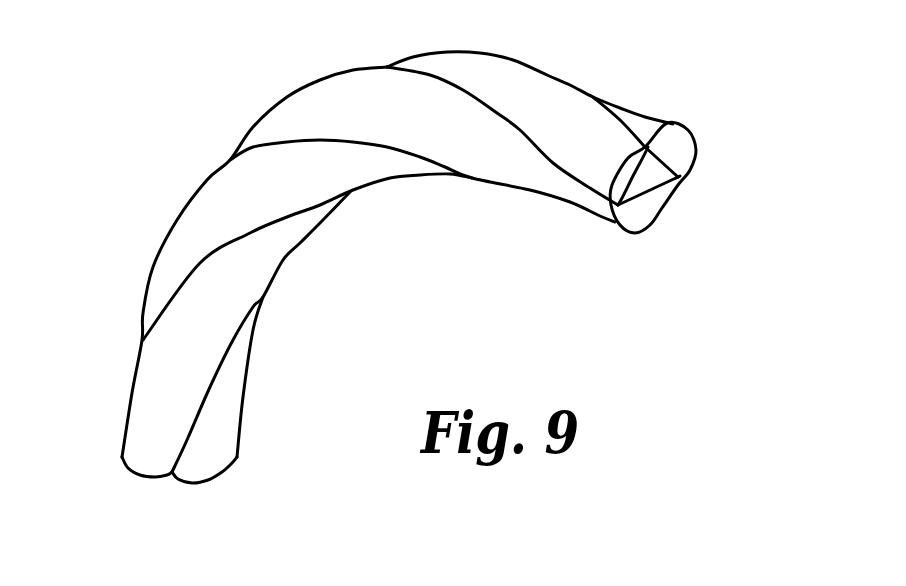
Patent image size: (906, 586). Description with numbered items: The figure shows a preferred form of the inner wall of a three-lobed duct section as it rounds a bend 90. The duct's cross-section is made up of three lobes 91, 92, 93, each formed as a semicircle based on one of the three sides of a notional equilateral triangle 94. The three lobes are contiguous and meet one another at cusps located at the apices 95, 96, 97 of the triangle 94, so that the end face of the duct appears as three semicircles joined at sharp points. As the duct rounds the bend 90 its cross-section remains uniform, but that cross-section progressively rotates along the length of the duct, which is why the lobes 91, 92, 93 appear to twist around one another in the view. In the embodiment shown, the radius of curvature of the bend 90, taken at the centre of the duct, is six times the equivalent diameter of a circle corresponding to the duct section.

The bend 90 is at (375, 233).
The lobe 91 is at (355, 173).
The lobe 92 is at (535, 177).
The lobe 93 is at (563, 90).
The notional equilateral triangle 94 is at (647, 203).
The apex of the triangle 95 is at (618, 205).
The apex of the triangle 96 is at (648, 147).
The apex of the triangle 97 is at (678, 177).